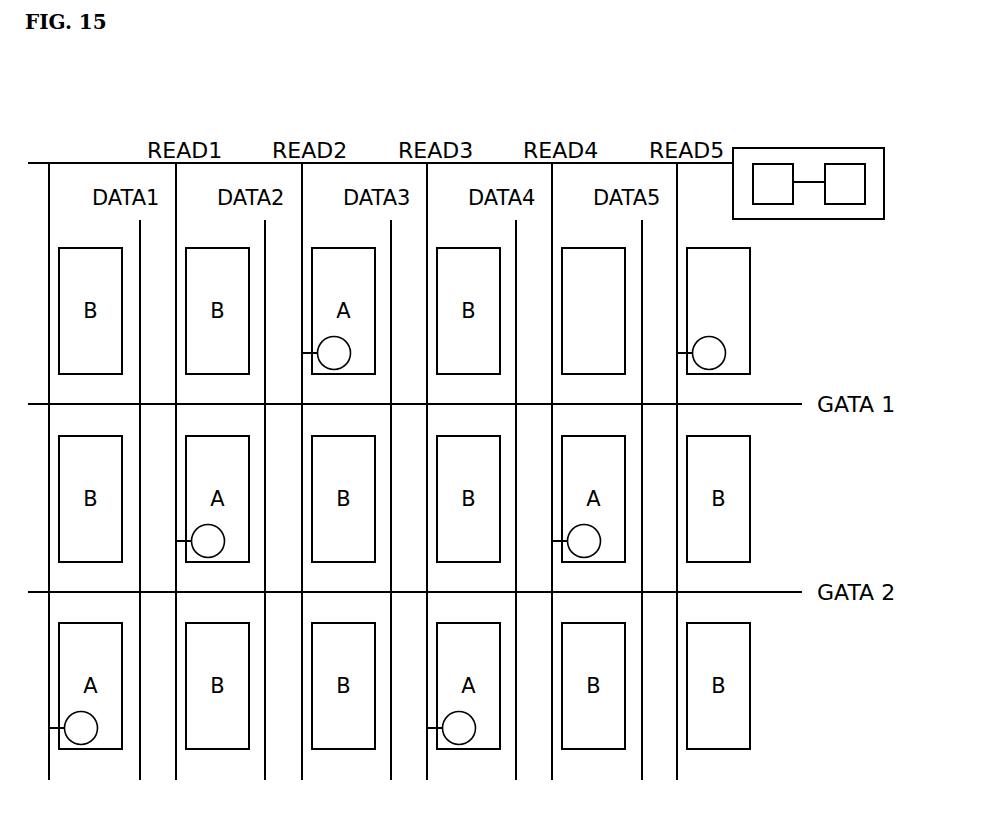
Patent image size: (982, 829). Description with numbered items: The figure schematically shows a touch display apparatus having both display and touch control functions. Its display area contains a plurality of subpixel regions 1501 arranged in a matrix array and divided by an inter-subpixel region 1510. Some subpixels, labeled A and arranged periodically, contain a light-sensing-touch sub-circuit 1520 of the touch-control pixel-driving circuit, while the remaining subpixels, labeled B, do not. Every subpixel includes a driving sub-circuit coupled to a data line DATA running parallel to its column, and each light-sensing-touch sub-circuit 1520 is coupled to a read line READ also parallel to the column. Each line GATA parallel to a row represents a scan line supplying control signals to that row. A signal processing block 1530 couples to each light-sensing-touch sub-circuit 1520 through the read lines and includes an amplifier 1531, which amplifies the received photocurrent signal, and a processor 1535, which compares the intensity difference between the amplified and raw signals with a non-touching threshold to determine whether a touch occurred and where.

The subpixel regions 1501 is at (590, 251).
The inter-subpixel region 1510 is at (712, 394).
The light-sensing-touch sub-circuit 1520 is at (712, 353).
The signal processing block 1530 is at (794, 137).
The amplifier 1531 is at (777, 164).
The processor 1535 is at (841, 150).